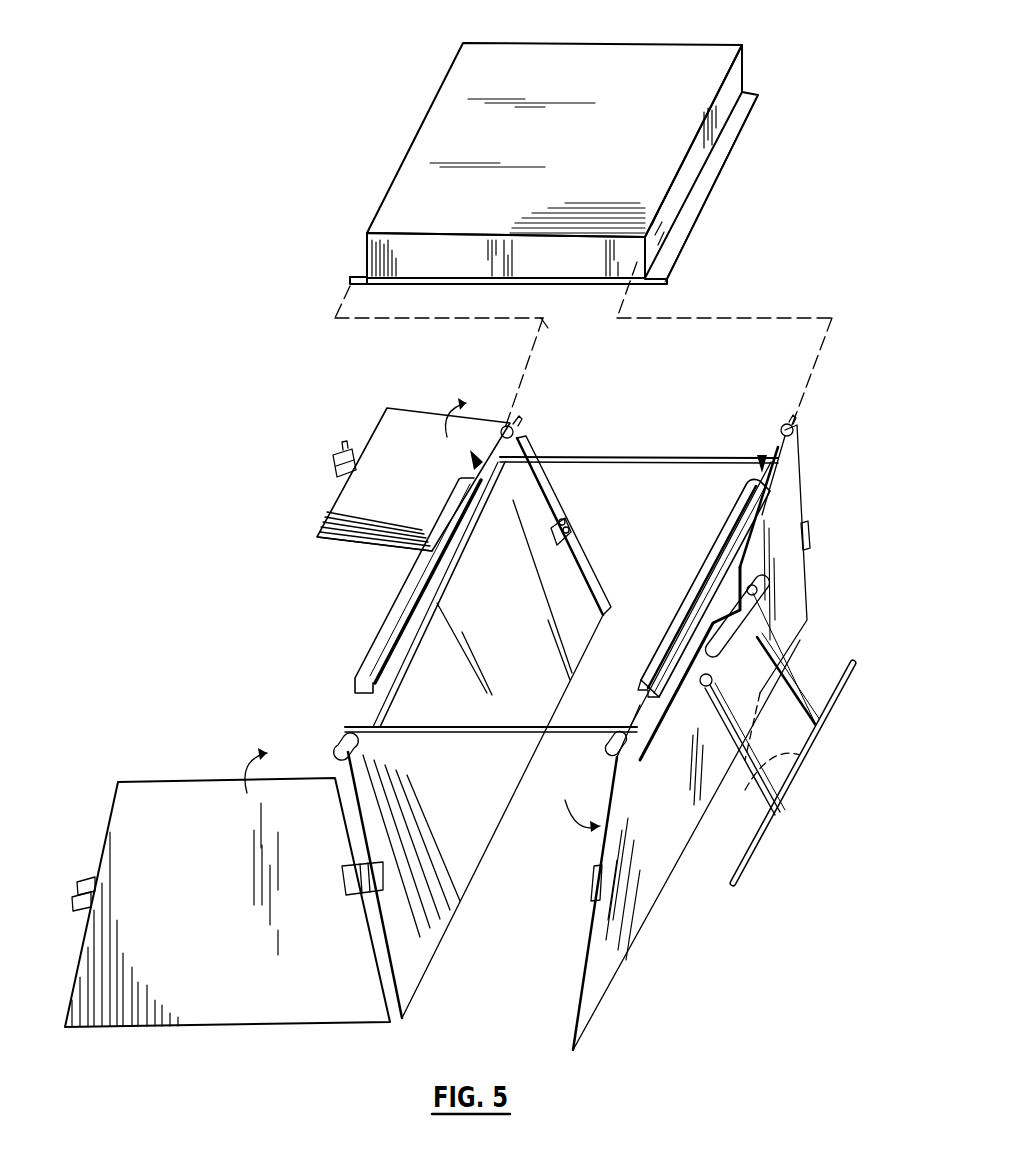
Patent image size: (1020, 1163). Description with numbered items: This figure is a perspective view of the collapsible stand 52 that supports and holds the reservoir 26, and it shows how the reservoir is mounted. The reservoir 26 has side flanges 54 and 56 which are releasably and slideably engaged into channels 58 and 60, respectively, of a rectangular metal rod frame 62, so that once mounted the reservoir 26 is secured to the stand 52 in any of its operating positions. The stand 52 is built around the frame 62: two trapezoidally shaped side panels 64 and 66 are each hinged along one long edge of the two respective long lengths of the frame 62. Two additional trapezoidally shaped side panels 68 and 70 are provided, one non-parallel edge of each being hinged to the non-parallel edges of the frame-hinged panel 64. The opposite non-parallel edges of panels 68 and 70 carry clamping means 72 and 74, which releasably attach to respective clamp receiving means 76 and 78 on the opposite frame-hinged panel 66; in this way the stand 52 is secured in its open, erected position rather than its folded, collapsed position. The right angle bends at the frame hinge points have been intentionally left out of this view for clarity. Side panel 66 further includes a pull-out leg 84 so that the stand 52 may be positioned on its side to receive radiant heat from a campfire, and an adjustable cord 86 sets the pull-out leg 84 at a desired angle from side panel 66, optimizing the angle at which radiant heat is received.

The reservoir 26 is at (430, 122).
The collapsible stand 52 is at (252, 480).
The side flange 54 is at (720, 168).
The side flange 56 is at (362, 270).
The channel 58 is at (722, 538).
The channel 60 is at (393, 608).
The rectangular metal rod frame 62 is at (628, 456).
The side panel 64 is at (470, 838).
The side panel 66 is at (670, 845).
The side panel 68 is at (300, 998).
The side panel 70 is at (326, 514).
The clamping means 72 is at (88, 880).
The clamping means 74 is at (340, 456).
The clamp receiving means 76 is at (592, 888).
The clamp receiving means 78 is at (806, 538).
The pull-out leg 84 is at (787, 703).
The adjustable cord 86 is at (773, 805).